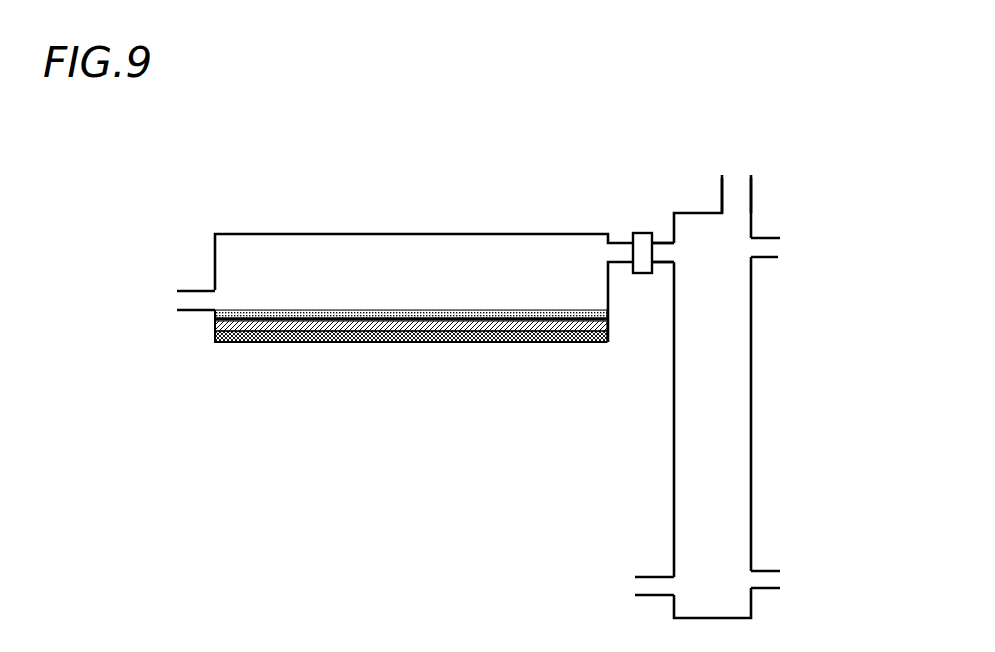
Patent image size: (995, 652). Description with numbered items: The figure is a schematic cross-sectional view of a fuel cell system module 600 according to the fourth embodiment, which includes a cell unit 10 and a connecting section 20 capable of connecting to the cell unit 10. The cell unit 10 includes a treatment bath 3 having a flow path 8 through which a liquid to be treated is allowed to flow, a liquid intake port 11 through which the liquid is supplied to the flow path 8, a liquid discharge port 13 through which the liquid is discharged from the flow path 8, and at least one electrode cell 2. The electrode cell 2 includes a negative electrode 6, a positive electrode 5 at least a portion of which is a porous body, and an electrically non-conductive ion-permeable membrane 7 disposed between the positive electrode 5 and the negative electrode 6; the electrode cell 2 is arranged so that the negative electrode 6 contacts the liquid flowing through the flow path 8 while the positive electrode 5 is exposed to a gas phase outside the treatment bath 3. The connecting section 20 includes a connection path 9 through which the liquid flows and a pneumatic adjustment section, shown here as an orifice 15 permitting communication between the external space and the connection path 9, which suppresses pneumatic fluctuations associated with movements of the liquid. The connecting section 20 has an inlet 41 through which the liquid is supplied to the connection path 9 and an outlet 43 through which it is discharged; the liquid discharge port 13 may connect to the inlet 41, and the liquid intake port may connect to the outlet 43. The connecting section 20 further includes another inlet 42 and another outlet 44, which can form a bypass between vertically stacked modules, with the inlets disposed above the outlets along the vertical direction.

The fuel cell system module 600 is at (805, 93).
The cell unit 10 is at (522, 185).
The connecting section 20 is at (780, 210).
The treatment bath 3 is at (408, 233).
The flow path 8 is at (311, 283).
The connection path 9 is at (723, 389).
The liquid intake port 11 is at (195, 290).
The liquid discharge port 13 is at (626, 233).
The orifice 15 is at (739, 175).
The electrode cell 2 is at (144, 378).
The positive electrode 5 is at (217, 342).
The negative electrode 6 is at (215, 312).
The ion-permeable membrane 7 is at (214, 326).
The inlet 41 is at (663, 230).
The other inlet 42 is at (773, 252).
The outlet 43 is at (650, 575).
The other outlet 44 is at (770, 572).